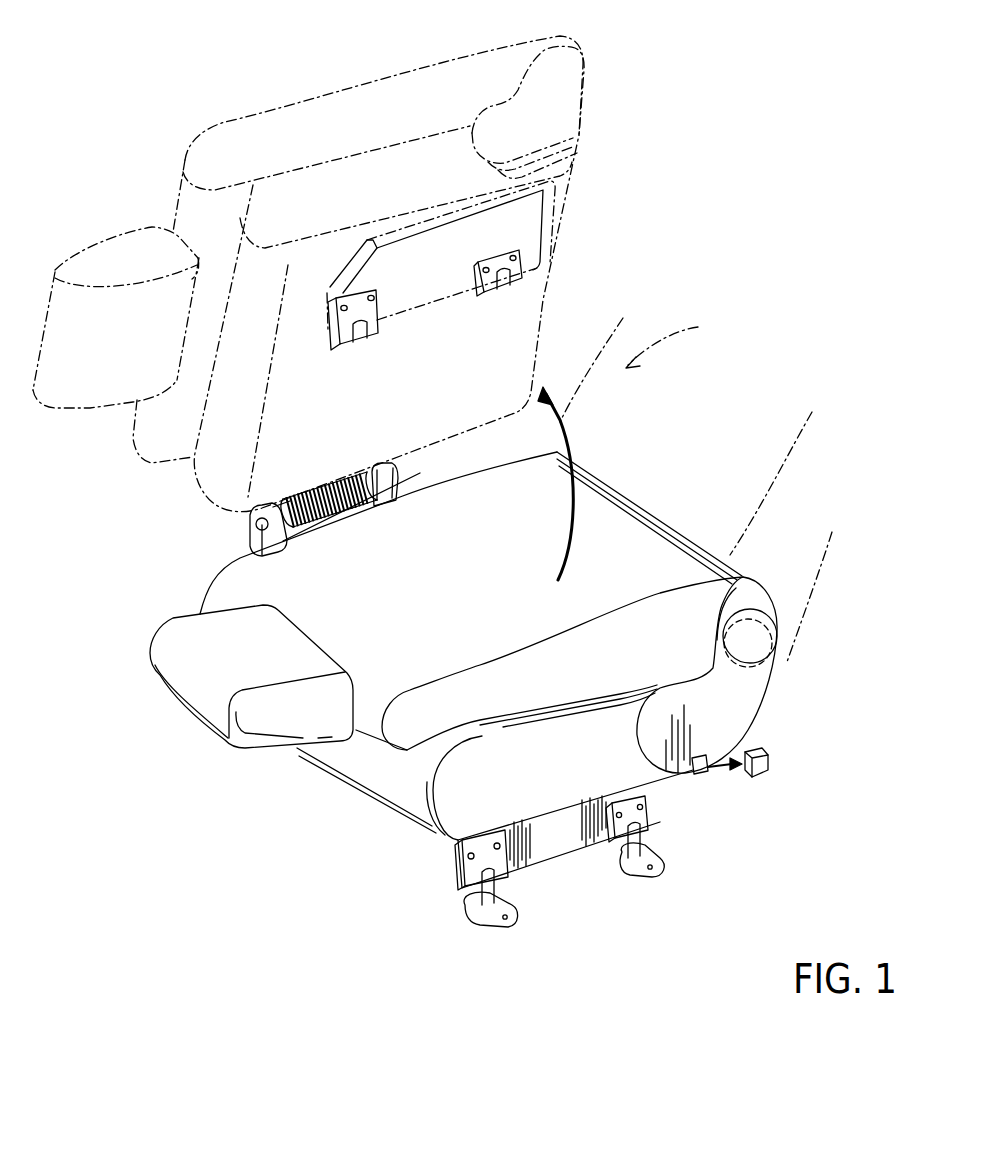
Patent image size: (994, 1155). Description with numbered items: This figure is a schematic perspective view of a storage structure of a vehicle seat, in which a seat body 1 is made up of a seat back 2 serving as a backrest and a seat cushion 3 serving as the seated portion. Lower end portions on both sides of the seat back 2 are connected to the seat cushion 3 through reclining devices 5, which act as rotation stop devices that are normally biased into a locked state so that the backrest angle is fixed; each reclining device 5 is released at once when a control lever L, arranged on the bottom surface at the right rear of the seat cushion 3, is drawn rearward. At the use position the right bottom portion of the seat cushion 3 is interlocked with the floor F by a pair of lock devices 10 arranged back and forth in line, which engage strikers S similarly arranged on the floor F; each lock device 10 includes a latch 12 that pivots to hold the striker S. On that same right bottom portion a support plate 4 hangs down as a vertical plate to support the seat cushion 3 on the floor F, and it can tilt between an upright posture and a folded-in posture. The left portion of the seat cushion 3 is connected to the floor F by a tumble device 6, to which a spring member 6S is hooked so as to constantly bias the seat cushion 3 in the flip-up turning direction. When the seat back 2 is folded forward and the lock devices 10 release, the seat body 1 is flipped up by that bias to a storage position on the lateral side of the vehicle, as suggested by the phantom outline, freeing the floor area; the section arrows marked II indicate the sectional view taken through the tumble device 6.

The seat body 1 is at (156, 516).
The seat back 2 is at (293, 124).
The seat cushion 3 is at (377, 170).
The support plate 4 is at (442, 274).
The reclining device 5 is at (753, 642).
The tumble device 6 is at (387, 472).
The spring member 6S is at (317, 492).
The lock device 10 is at (457, 890).
The latch 12 is at (482, 913).
The striker S is at (495, 892).
The control lever L is at (707, 775).
The floor F is at (214, 804).
The section line II- II is at (675, 658).